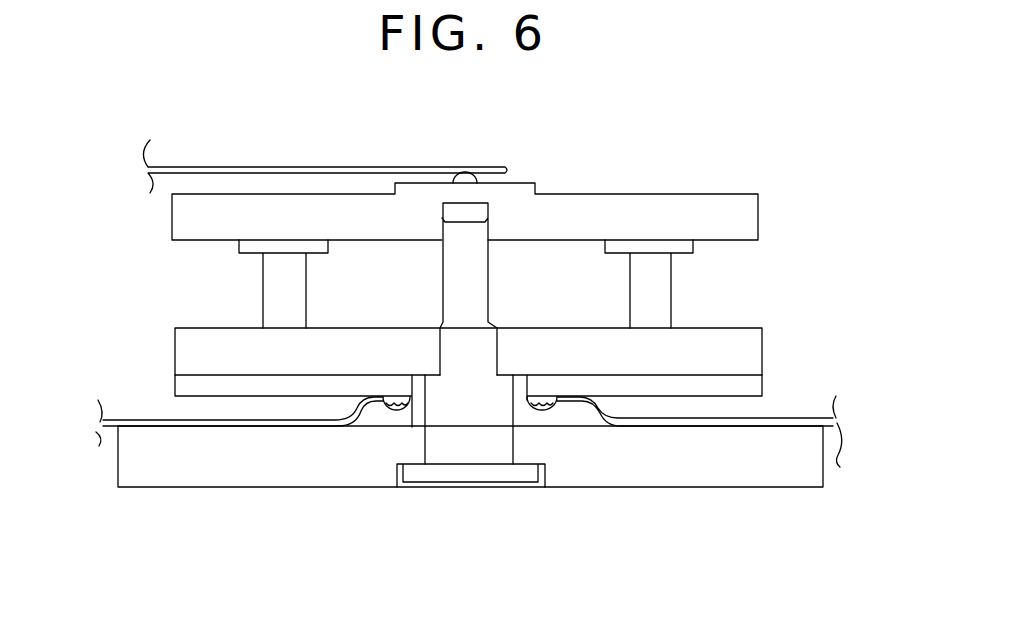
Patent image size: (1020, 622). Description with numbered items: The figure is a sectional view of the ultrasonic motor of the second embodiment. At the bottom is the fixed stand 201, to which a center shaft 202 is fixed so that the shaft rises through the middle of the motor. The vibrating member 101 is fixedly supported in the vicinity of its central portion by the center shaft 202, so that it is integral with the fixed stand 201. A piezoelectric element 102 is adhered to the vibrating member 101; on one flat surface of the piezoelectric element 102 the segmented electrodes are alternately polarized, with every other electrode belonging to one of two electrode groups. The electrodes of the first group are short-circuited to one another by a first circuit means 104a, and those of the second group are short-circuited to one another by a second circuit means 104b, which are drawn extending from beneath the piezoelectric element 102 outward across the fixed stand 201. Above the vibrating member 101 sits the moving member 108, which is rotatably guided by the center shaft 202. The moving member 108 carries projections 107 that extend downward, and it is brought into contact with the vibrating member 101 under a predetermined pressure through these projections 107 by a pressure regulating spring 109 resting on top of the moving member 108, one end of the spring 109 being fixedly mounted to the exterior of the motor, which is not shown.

The vibrating member 101 is at (742, 357).
The piezoelectric element 102 is at (187, 387).
The first circuit means 104a is at (108, 428).
The second circuit means 104b is at (713, 450).
The projections 107 is at (665, 292).
The moving member 108 is at (658, 205).
The pressure regulating spring 109 is at (345, 166).
The fixed stand 201 is at (763, 480).
The center shaft 202 is at (462, 452).